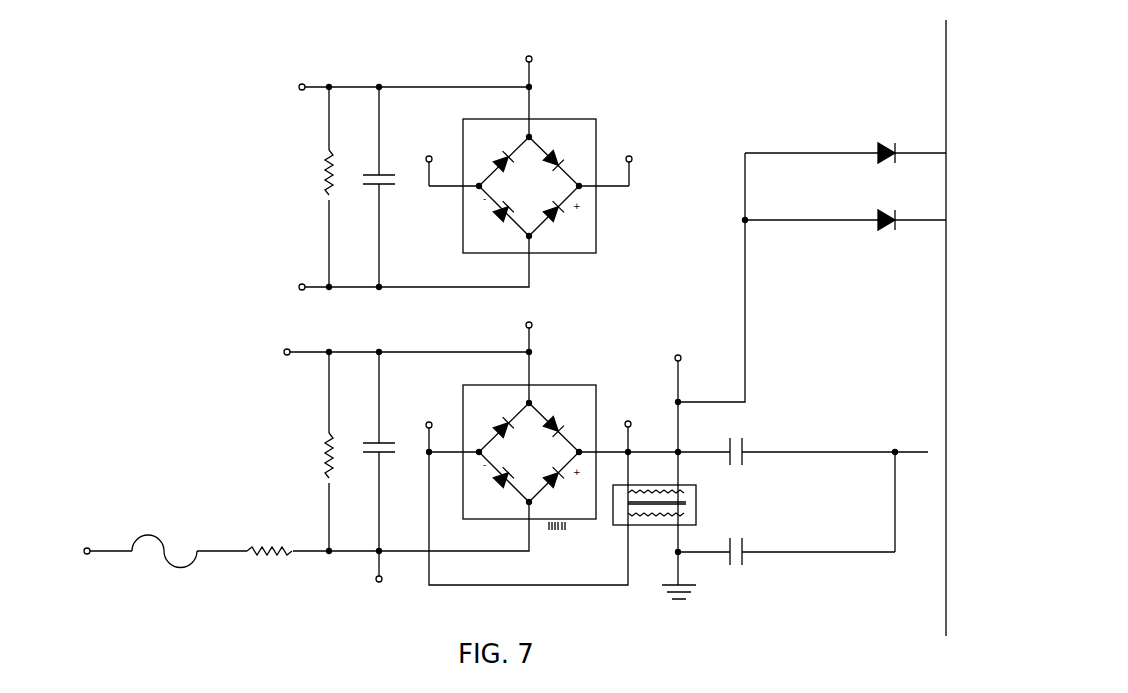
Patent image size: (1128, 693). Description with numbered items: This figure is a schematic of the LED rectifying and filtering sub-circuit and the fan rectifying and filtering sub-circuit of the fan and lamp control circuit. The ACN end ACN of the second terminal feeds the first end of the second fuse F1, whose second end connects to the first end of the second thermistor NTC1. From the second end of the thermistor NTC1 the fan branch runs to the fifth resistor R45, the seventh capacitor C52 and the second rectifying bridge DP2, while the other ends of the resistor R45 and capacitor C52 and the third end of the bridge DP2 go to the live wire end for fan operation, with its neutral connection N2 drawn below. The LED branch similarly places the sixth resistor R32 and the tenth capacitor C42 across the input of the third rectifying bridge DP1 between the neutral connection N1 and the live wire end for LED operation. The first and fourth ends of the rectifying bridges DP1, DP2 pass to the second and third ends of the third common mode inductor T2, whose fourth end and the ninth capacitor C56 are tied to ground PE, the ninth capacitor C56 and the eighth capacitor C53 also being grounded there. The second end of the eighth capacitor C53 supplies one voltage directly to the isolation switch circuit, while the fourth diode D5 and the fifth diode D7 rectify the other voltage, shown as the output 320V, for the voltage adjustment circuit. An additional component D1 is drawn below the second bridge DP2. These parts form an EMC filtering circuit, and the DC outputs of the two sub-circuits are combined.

The sixth resistor R32 is at (323, 187).
The tenth capacitor C42 is at (379, 187).
The neutral terminal (light) N1 is at (396, 265).
The third rectifying bridge DP1 is at (528, 187).
The fifth resistor R45 is at (316, 451).
The seventh capacitor C52 is at (373, 451).
The neutral terminal (fan) N2 is at (379, 578).
The ACN end of the second terminal ACN is at (69, 551).
The second fuse F1 is at (163, 537).
The second thermistor NTC1 is at (260, 530).
The second rectifying bridge DP2 is at (528, 454).
The common mode inductor D1 is at (569, 526).
The 320V+ output terminal 320V is at (705, 369).
The fourth diode D5 is at (845, 151).
The fifth diode D7 is at (845, 218).
The eighth capacitor C53 is at (778, 451).
The protective earth PE is at (902, 494).
The ninth capacitor C56 is at (786, 551).
The third common mode inductor T2 is at (667, 506).